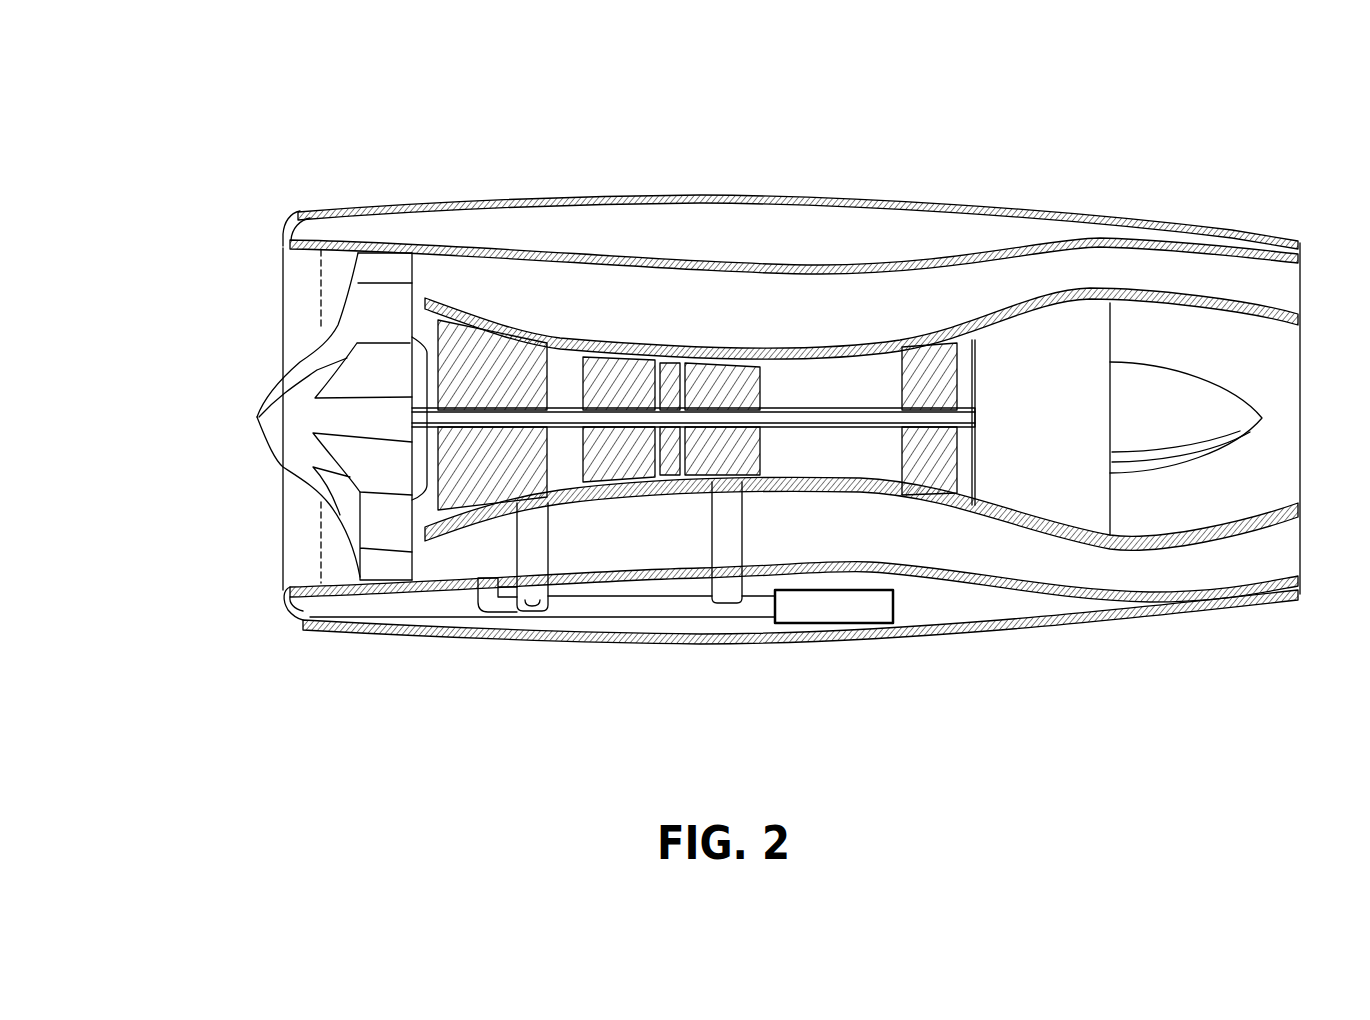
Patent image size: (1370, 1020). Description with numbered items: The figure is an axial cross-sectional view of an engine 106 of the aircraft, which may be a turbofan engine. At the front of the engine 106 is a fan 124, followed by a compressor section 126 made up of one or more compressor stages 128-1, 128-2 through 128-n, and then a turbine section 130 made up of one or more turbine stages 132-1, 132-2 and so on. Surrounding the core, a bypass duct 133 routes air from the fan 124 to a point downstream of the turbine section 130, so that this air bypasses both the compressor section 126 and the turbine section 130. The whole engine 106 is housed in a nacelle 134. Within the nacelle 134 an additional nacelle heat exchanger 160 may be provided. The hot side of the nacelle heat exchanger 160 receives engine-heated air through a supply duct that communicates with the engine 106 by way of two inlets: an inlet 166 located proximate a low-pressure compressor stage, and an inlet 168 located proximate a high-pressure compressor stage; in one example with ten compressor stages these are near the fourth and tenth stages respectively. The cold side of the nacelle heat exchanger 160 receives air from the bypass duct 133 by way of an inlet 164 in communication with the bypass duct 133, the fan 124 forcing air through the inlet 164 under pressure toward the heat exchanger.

The engine 106 is at (263, 340).
The fan 124 is at (360, 298).
The compressor section 126 is at (750, 362).
The compressor stage 128-1 is at (452, 477).
The compressor stage 128-2 is at (590, 500).
The compressor stage 128-n is at (735, 385).
The turbine section 130 is at (959, 537).
The turbine stage 132-1 is at (937, 358).
The turbine stage 132-2 is at (1080, 505).
The bypass duct 133 is at (1238, 272).
The nacelle 134 is at (1237, 233).
The nacelle heat exchanger 160 is at (858, 613).
The inlet 164 is at (490, 590).
The inlet 166 is at (528, 550).
The inlet 168 is at (733, 593).